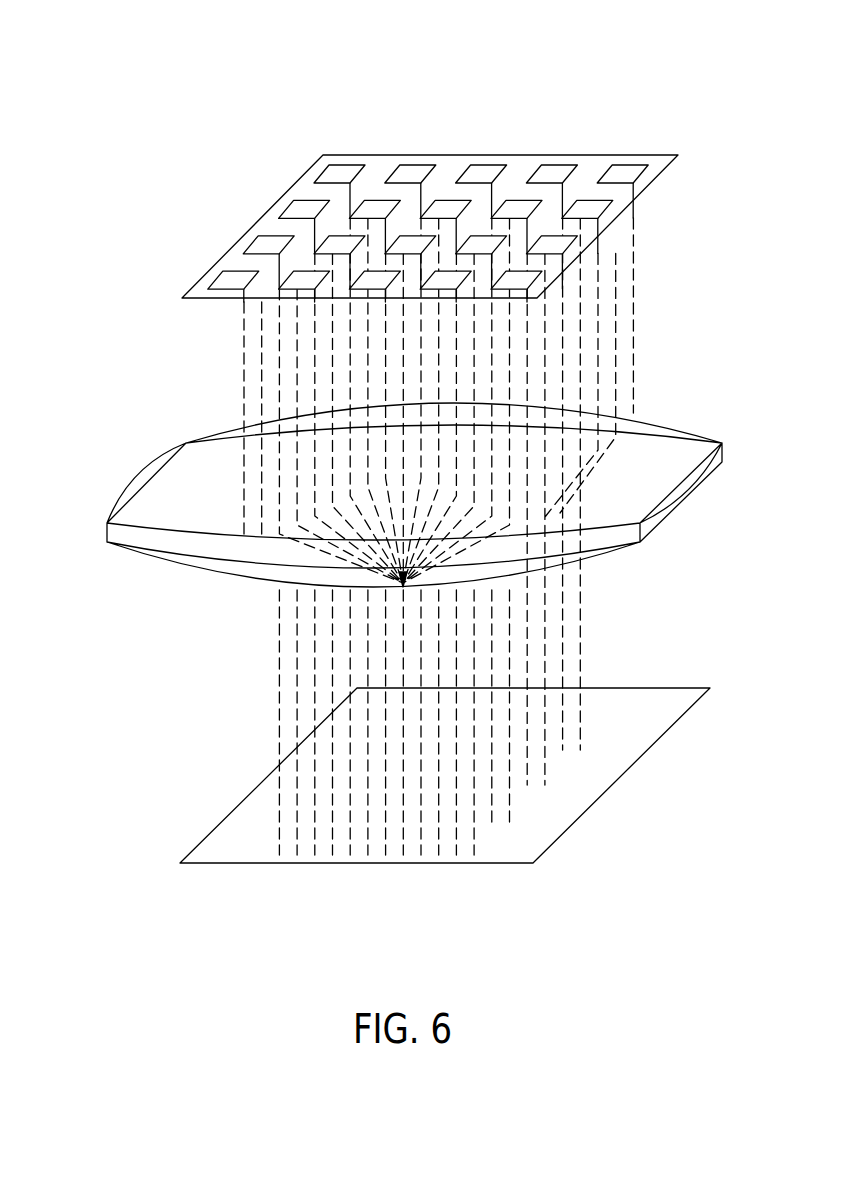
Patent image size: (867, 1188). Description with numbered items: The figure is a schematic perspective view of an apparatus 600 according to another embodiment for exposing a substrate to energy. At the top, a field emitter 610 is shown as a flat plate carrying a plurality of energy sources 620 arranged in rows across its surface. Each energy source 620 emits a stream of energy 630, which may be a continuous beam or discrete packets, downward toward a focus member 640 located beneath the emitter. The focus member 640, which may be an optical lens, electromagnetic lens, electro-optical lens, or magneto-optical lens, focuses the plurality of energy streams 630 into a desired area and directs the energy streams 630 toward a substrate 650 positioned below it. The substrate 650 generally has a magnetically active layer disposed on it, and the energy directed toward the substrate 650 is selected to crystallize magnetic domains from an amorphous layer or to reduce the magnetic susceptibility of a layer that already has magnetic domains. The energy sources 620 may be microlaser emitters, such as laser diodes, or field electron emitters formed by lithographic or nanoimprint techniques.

The apparatus 600 is at (662, 78).
The field emitter 610 is at (258, 222).
The energy sources 620 is at (302, 206).
The stream of energy 630 is at (635, 263).
The focus member 640 is at (133, 487).
The substrate 650 is at (617, 777).